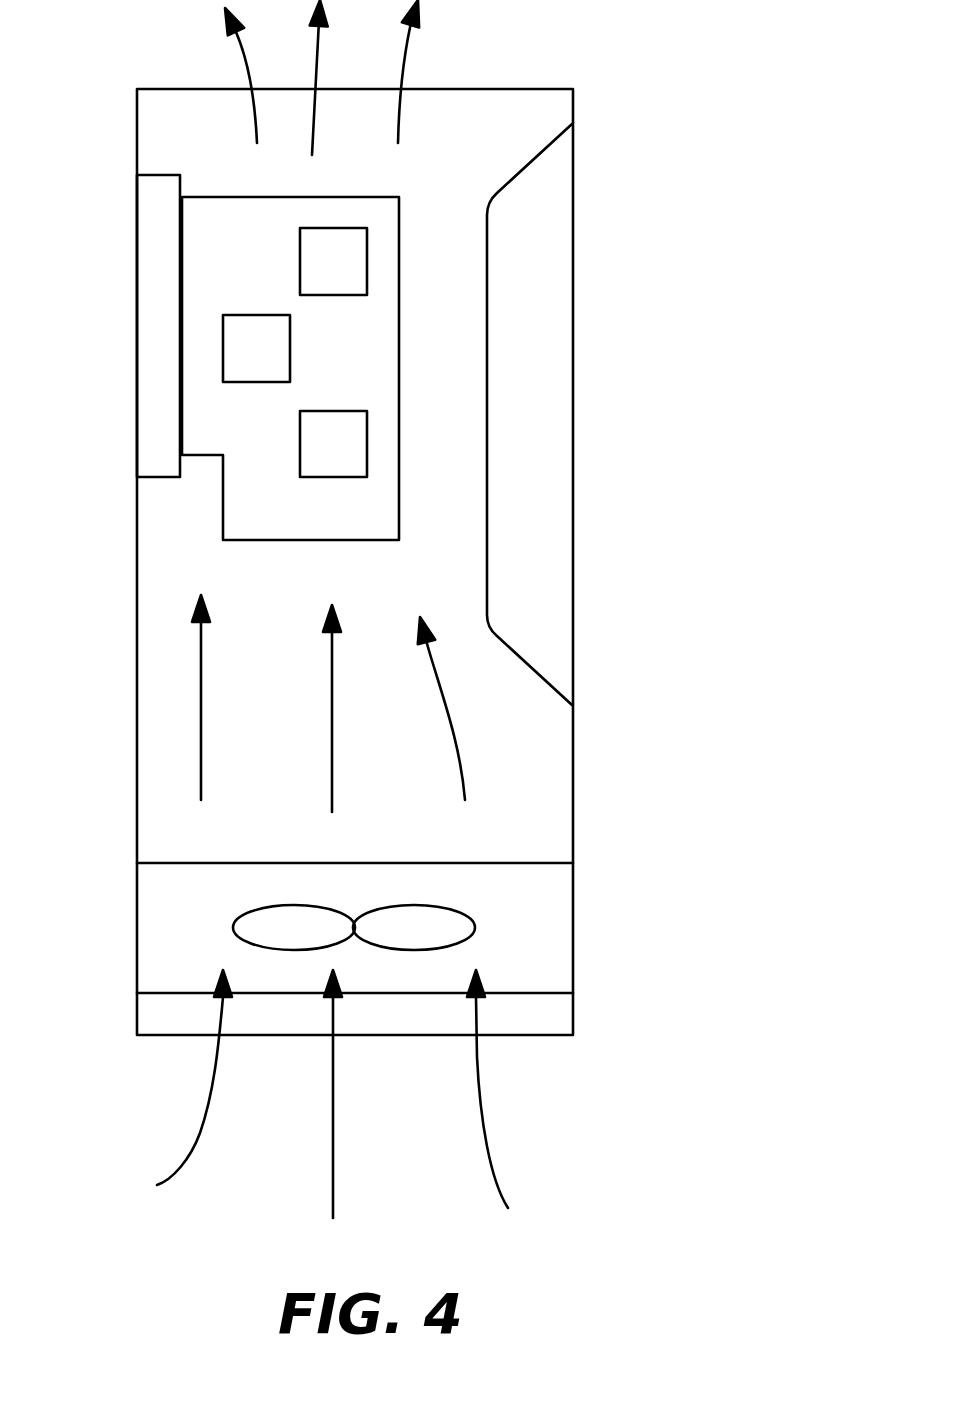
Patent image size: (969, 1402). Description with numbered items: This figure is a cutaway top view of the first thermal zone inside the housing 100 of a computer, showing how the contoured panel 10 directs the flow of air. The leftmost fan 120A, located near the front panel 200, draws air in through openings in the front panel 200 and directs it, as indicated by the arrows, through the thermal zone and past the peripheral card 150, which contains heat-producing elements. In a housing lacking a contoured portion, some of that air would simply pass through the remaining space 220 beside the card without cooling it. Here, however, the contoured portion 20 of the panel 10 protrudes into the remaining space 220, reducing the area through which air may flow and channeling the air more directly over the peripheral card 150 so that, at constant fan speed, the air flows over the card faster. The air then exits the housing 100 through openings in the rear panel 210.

The contoured panel 10 is at (575, 517).
The contoured portion 20 is at (487, 455).
The housing 100 is at (137, 745).
The leftmost fan 120A is at (399, 924).
The peripheral card 150 is at (298, 381).
The front panel 200 is at (553, 1038).
The rear panel 210 is at (488, 89).
The remaining space 220 is at (327, 368).